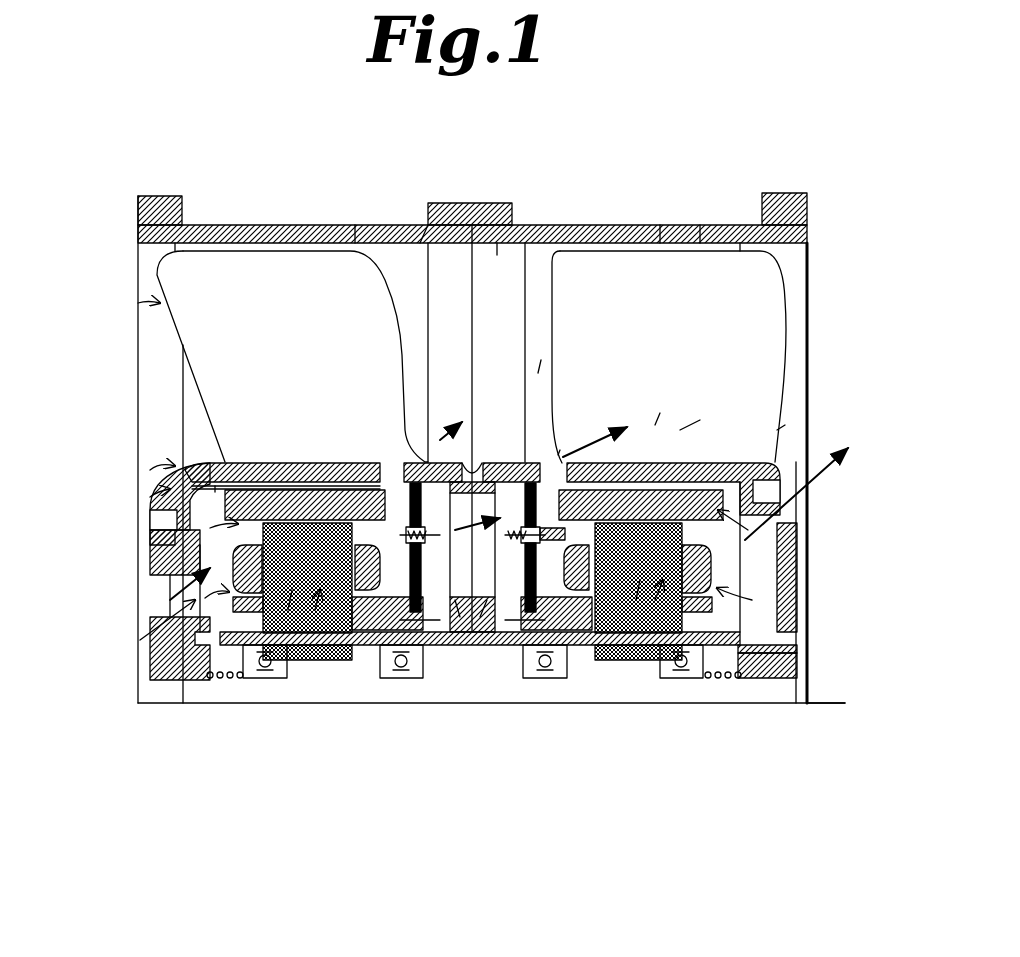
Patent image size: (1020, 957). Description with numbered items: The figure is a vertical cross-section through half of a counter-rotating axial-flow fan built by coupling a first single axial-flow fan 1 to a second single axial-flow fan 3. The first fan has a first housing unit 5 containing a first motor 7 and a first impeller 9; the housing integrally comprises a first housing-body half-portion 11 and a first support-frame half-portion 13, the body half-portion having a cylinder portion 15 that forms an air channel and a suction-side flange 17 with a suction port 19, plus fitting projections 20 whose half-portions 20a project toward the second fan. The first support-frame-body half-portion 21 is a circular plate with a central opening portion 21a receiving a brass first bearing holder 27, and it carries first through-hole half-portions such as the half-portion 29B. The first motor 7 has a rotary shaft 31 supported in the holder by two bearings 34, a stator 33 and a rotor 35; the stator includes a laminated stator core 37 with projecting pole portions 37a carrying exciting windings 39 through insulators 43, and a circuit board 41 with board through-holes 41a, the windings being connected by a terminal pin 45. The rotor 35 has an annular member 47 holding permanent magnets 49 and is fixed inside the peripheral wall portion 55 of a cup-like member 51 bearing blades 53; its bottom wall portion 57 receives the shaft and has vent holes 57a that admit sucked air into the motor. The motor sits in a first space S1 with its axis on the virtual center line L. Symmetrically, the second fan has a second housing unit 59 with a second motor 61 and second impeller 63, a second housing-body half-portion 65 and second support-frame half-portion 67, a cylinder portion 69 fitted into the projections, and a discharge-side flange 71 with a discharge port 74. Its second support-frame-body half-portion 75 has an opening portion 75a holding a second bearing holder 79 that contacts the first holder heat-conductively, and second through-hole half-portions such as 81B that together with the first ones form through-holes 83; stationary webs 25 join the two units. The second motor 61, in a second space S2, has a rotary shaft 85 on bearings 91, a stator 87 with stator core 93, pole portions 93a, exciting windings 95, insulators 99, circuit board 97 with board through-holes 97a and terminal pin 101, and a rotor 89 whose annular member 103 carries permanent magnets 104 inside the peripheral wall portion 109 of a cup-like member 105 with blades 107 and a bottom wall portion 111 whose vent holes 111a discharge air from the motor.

The first single axial-flow fan 1 is at (96, 284).
The second single axial-flow fan 3 is at (820, 287).
The first housing unit 5 is at (431, 316).
The first motor 7 is at (159, 610).
The first impeller 9 is at (188, 474).
The first housing-body half-portion 11 is at (314, 242).
The first support-frame half-portion 13 is at (423, 390).
The cylinder portion 15 is at (355, 236).
The suction-side flange 17 is at (160, 196).
The suction port 19 is at (138, 302).
The fitting projections 20 is at (472, 312).
The half-portions of the fitting projections 20a is at (492, 220).
The first support-frame-body half-portion 21 is at (475, 650).
The opening portion 21a is at (478, 655).
The webs 25 is at (428, 235).
The first bearing holder 27 is at (370, 650).
The first through-hole half-portion 29B is at (453, 286).
The rotary shaft 31 is at (172, 703).
The stator 33 is at (285, 660).
The bearings 34 is at (262, 680).
The rotor 35 is at (175, 534).
The stator core 37 is at (335, 650).
The projecting pole portions 37a is at (320, 640).
The exciting windings 39 is at (245, 570).
The circuit board 41 is at (415, 655).
The board through-holes 41a is at (420, 655).
The insulators 43 is at (185, 657).
The terminal pin 45 is at (360, 468).
The annular member 47 is at (280, 465).
The permanent magnets 49 is at (232, 468).
The cup-like member 51 is at (148, 496).
The blades 53 is at (163, 269).
The peripheral wall portion 55 is at (312, 468).
The bottom wall portion 57 is at (164, 557).
The vent holes 57a is at (195, 586).
The second housing unit 59 is at (798, 313).
The second motor 61 is at (770, 630).
The second impeller 63 is at (800, 531).
The second housing-body half-portion 65 is at (667, 216).
The second support-frame half-portion 67 is at (540, 373).
The cylinder portion 69 is at (508, 476).
The discharge-side flange 71 is at (785, 194).
The discharge port 74 is at (793, 343).
The second support-frame-body half-portion 75 is at (498, 650).
The opening portion 75a is at (555, 650).
The second bearing holder 79 is at (570, 650).
The second through-hole half-portion 81B is at (533, 474).
The through-holes 83 is at (558, 455).
The rotary shaft 85 is at (781, 703).
The stator 87 is at (680, 650).
The rotor 89 is at (711, 580).
The bearings 91 is at (545, 680).
The stator core 93 is at (630, 650).
The projecting pole portions 93a is at (650, 650).
The exciting windings 95 is at (780, 613).
The circuit board 97 is at (520, 650).
The board through-holes 97a is at (597, 650).
The insulators 99 is at (715, 650).
The terminal pin 101 is at (647, 417).
The annular member 103 is at (777, 430).
The permanent magnets 104 is at (810, 476).
The cup-like member 105 is at (797, 548).
The blades 107 is at (730, 258).
The peripheral wall portion 109 is at (680, 430).
The bottom wall portion 111 is at (750, 520).
The vent holes 111a is at (745, 520).
The virtual center line L is at (815, 702).
The first space S1 is at (150, 467).
The second space S2 is at (762, 360).